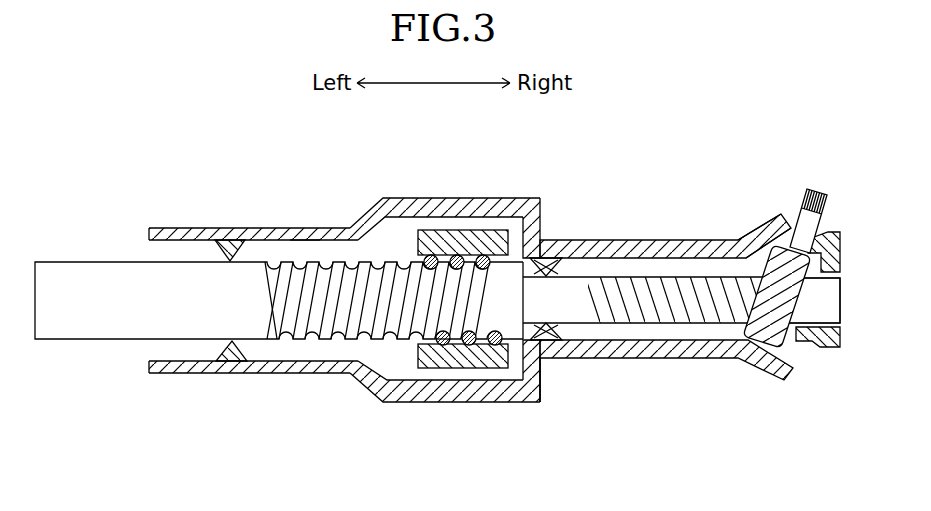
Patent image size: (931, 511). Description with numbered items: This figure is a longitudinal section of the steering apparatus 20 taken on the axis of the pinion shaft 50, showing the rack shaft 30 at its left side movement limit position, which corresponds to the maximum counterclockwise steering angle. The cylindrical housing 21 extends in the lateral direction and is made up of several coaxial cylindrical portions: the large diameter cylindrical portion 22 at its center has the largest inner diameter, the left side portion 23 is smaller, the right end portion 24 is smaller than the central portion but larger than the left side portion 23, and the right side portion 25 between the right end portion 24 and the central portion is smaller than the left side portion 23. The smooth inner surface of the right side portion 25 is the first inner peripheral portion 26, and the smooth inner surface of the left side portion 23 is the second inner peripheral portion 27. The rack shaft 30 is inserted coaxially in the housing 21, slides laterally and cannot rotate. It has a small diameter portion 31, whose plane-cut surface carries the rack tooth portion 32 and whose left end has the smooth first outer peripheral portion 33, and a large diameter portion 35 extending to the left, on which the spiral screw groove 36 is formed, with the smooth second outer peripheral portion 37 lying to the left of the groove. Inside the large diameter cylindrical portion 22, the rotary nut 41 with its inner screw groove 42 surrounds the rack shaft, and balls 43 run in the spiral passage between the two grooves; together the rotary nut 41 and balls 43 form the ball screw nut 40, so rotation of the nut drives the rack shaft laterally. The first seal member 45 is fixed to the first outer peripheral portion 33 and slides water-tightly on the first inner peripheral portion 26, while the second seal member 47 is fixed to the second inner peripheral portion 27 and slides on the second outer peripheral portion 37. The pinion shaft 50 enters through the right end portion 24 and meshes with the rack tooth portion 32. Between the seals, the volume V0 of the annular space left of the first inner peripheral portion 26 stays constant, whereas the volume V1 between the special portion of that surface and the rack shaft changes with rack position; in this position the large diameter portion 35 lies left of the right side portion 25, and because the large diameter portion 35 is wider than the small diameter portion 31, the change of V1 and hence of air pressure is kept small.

The steering apparatus 20 is at (272, 143).
The housing 21 is at (385, 198).
The large diameter cylindrical portion 22 is at (518, 198).
The left side portion 23 is at (276, 228).
The right end portion 24 is at (830, 241).
The right side portion 25 is at (684, 240).
The first inner peripheral portion 26 is at (720, 262).
The second inner peripheral portion 27 is at (302, 241).
The rack shaft 30 is at (828, 345).
The small diameter portion 31 is at (820, 312).
The rack tooth portion 32 is at (646, 345).
The first outer peripheral portion 33 is at (587, 314).
The large diameter portion 35 is at (280, 354).
The screw groove 36 is at (512, 330).
The second outer peripheral portion 37 is at (92, 333).
The ball screw nut 40 is at (442, 319).
The rotary nut 41 is at (432, 372).
The screw groove 42 is at (468, 345).
The balls 43 is at (483, 254).
The first seal member 45 is at (548, 262).
The second seal member 47 is at (212, 243).
The pinion shaft 50 is at (786, 247).
The volume of annular space V0 is at (285, 351).
The volume of annular space V1 is at (541, 362).